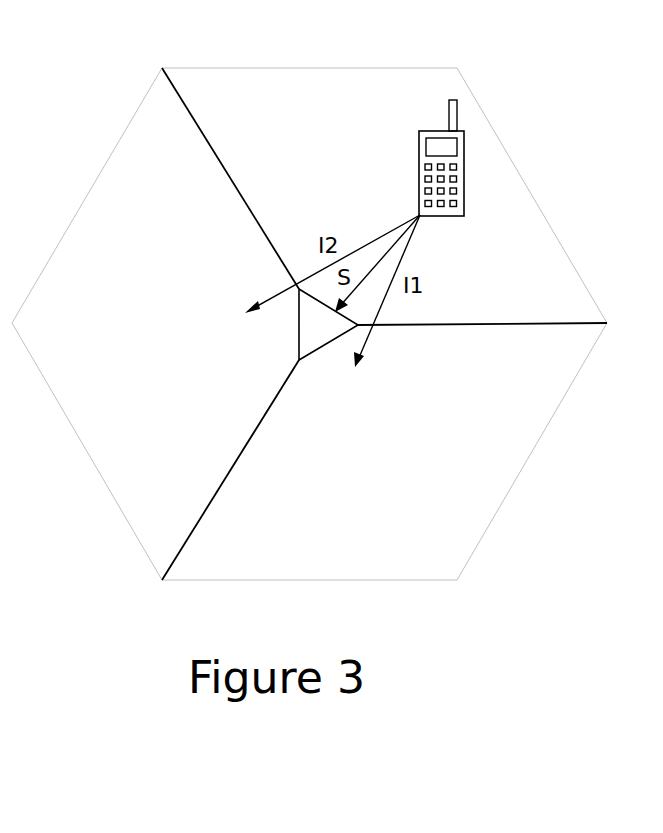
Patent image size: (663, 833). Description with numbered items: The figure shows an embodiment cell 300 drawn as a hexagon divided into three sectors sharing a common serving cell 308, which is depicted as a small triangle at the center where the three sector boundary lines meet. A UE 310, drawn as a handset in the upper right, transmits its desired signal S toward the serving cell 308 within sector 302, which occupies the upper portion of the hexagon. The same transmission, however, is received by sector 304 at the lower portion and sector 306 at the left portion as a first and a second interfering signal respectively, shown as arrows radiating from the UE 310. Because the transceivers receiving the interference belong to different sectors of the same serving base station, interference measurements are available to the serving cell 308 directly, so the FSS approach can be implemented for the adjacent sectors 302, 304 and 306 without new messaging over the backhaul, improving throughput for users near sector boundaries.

The cell 300 is at (245, 66).
The sector 302 is at (241, 98).
The sector 304 is at (259, 556).
The sector 306 is at (82, 323).
The serving cell 308 is at (299, 331).
The UE 310 is at (419, 189).